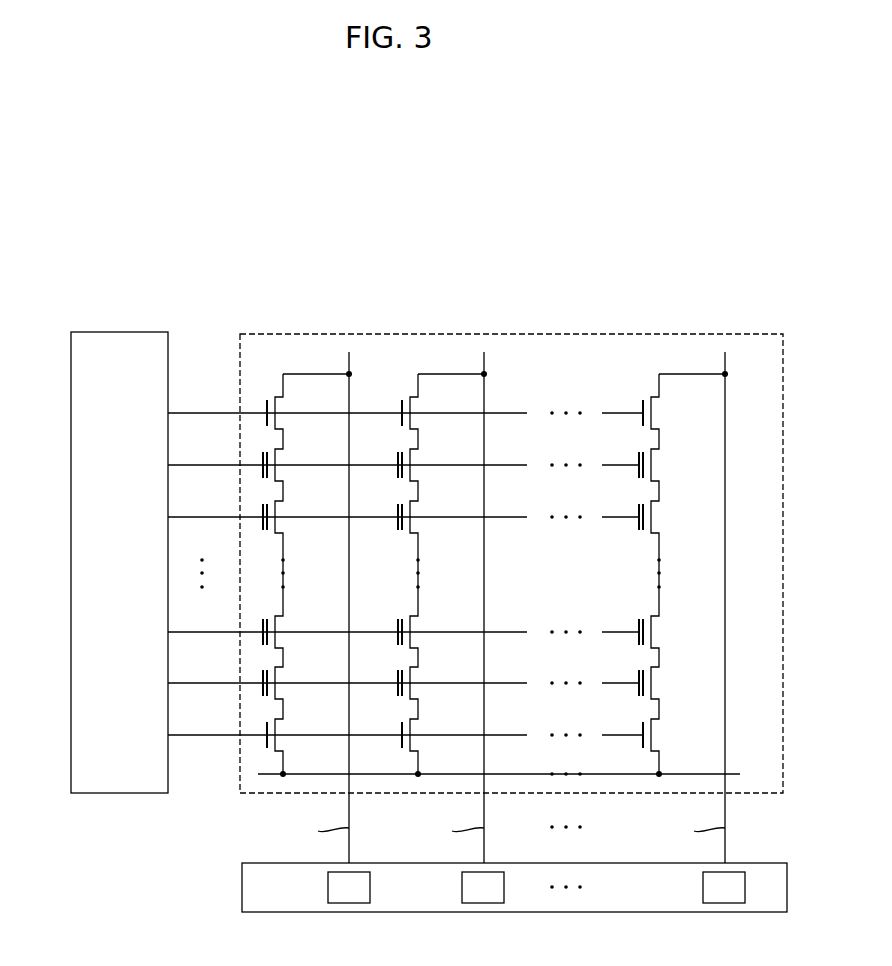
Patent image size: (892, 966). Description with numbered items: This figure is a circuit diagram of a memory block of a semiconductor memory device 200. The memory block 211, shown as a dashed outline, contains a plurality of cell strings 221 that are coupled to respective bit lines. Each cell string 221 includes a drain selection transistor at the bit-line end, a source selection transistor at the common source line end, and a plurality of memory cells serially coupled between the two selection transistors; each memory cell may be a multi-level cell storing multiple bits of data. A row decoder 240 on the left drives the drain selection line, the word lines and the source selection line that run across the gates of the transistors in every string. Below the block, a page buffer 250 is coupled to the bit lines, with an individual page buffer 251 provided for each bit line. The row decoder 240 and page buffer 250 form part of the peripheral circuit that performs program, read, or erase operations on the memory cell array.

The memory device 200 is at (766, 253).
The memory block 211 is at (693, 333).
The cell string 221 is at (274, 378).
The row decoder 240 is at (122, 332).
The page buffer 250 is at (242, 888).
The page buffer 251 is at (328, 888).